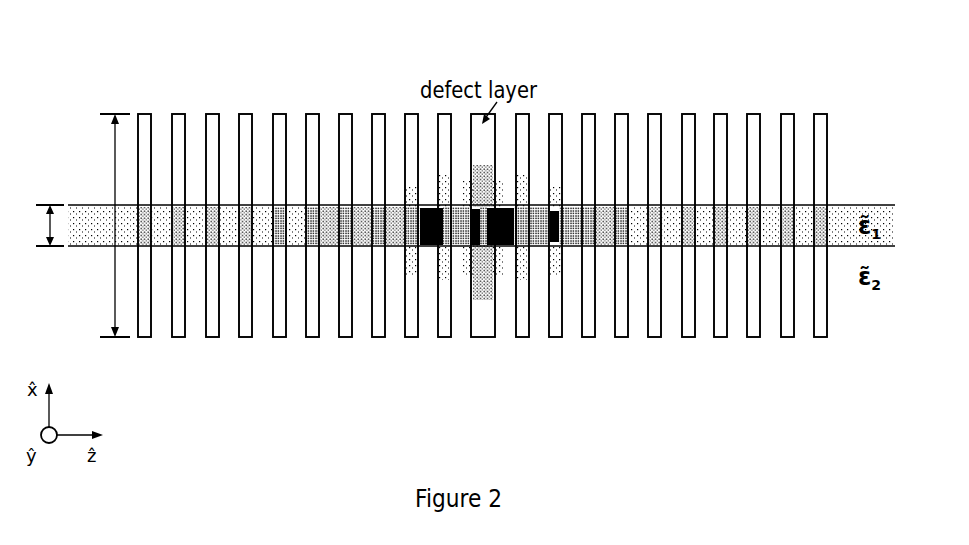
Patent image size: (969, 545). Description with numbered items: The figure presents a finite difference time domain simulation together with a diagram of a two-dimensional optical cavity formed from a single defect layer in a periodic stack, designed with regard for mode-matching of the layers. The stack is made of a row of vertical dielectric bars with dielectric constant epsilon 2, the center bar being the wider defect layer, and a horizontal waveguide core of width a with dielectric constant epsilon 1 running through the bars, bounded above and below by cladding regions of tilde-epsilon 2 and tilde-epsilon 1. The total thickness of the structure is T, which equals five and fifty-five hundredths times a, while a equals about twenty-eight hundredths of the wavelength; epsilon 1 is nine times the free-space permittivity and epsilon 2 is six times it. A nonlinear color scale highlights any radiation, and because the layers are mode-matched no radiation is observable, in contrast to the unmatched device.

The waveguide core layer (dielectric constant epsilon 1) 1 is at (821, 218).
The periodic dielectric layers (dielectric constant epsilon 2) 2 is at (821, 179).
The total thickness T is at (108, 225).
The core width a is at (43, 225).